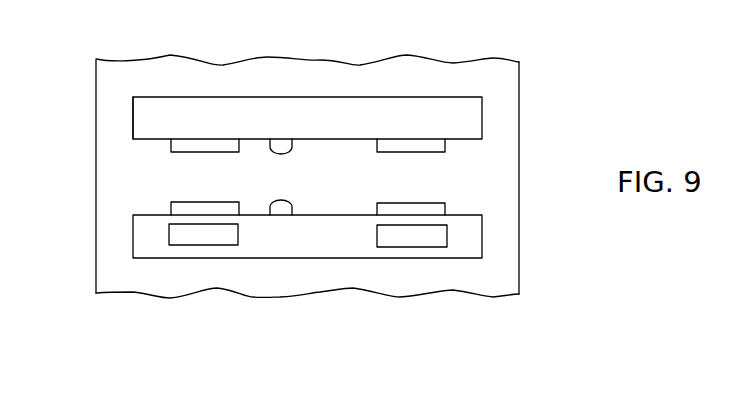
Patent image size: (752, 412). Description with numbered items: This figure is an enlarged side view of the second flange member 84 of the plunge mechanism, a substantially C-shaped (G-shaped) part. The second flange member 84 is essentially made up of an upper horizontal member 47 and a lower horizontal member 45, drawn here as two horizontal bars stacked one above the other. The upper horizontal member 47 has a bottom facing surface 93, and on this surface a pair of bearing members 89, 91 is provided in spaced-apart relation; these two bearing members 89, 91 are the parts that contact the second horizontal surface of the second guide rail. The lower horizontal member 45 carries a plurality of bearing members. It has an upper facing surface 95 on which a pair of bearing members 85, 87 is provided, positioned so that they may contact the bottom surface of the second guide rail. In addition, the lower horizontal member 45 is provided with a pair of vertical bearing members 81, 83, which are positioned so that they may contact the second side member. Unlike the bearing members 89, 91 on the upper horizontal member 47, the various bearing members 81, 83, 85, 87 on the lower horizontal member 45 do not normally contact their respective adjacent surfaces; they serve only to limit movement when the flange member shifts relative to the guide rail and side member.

The second flange member 84 is at (413, 96).
The upper horizontal member 47 is at (133, 119).
The lower horizontal member 45 is at (135, 233).
The bearing member 89 is at (188, 152).
The bearing member 91 is at (428, 152).
The bottom facing surface 93 is at (290, 139).
The bearing member 85 is at (188, 202).
The bearing member 87 is at (428, 203).
The upper facing surface 95 is at (292, 215).
The vertical bearing member 81 is at (177, 245).
The vertical bearing member 83 is at (447, 235).